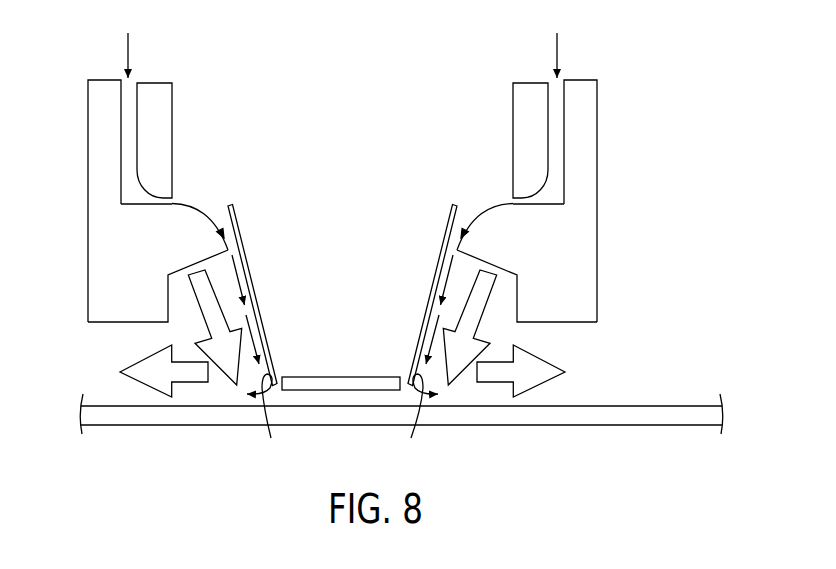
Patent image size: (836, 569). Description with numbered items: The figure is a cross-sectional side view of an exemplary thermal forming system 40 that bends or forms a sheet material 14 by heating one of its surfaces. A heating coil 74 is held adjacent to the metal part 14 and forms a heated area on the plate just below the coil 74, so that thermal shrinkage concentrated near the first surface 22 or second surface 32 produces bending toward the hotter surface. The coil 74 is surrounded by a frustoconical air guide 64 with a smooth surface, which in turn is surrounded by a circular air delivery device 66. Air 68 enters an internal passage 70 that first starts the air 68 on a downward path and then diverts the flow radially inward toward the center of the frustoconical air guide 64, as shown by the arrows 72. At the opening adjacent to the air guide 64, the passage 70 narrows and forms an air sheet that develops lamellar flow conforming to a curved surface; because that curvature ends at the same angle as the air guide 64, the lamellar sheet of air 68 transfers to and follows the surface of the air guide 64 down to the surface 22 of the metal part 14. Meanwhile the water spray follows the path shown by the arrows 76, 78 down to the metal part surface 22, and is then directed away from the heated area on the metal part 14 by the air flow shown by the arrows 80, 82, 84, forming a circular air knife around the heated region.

The sheet material 14 is at (401, 416).
The first surface 22 is at (615, 405).
The second surface 32 is at (568, 426).
The thermal forming system 40 is at (656, 65).
The frustoconical air guide 64 is at (243, 231).
The circular air delivery device 66 is at (105, 186).
The air 68 is at (127, 47).
The internal passage 70 is at (128, 124).
The arrows 72 is at (195, 204).
The heating coil 74 is at (342, 376).
The arrows 76 is at (190, 291).
The arrows 78 is at (140, 360).
The arrows 80 is at (242, 282).
The arrows 82 is at (250, 321).
The arrows 84 is at (342, 421).